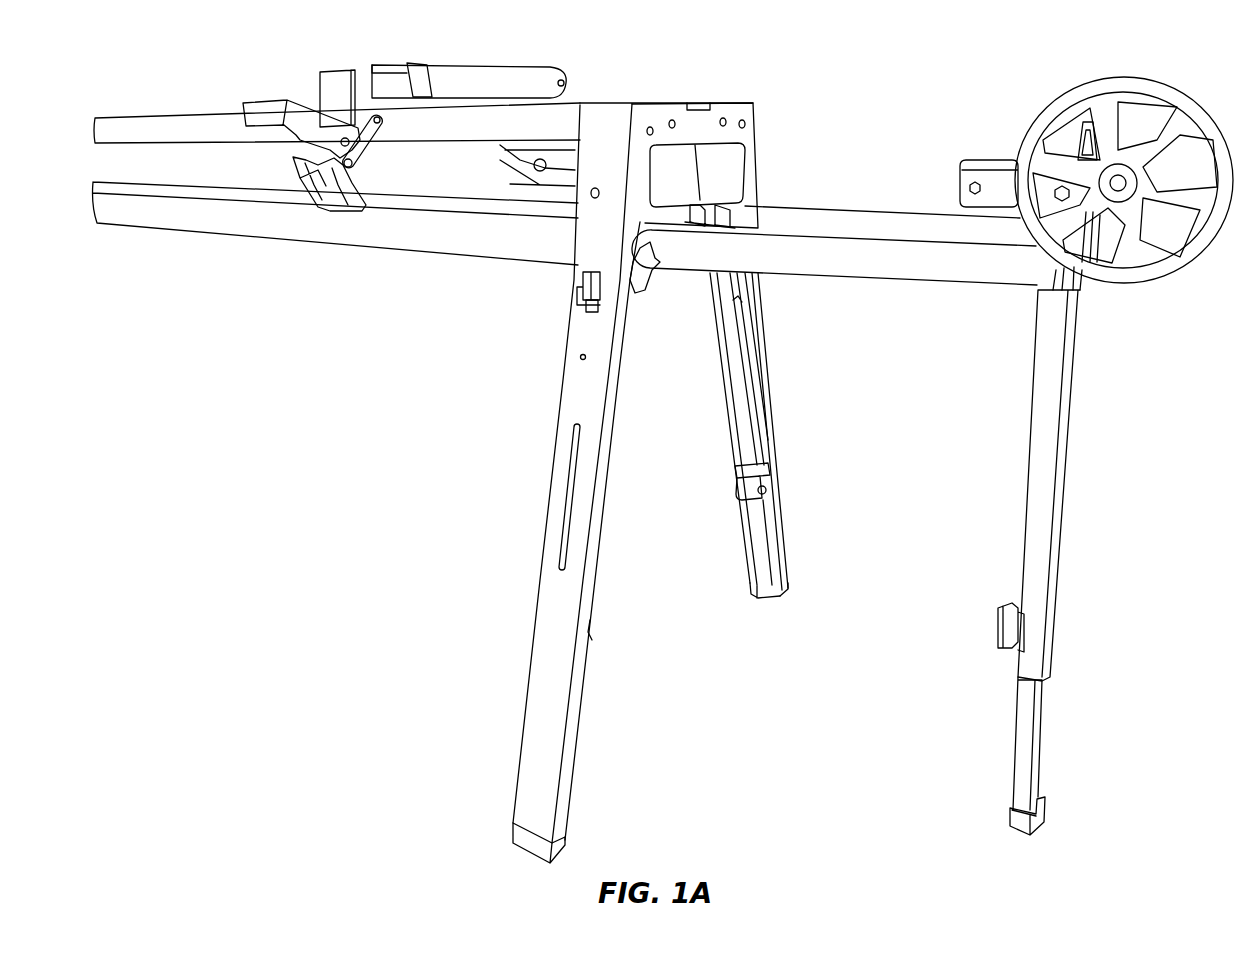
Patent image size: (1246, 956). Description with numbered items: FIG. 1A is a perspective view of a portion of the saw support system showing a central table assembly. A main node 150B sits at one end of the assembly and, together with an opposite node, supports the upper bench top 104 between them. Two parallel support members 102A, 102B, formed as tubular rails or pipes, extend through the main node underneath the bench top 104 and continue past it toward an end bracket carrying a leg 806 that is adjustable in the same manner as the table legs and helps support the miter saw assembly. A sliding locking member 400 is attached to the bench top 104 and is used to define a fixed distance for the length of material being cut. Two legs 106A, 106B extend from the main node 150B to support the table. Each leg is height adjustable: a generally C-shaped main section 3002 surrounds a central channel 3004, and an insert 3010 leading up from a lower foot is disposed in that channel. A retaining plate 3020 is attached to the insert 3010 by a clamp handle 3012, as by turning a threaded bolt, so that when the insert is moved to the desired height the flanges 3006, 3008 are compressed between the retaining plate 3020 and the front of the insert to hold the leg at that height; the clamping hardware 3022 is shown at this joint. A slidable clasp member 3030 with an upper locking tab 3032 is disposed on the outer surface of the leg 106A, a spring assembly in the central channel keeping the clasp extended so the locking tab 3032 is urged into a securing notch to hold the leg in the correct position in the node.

The bench top 104 is at (150, 130).
The parallel support member 102A is at (165, 218).
The parallel support member 102B is at (920, 225).
The sliding locking member 400 is at (373, 145).
The main node 150B is at (710, 128).
The upper locking tab 3032 is at (590, 283).
The slidable clasp member 3030 is at (582, 305).
The leg 106A is at (548, 652).
The leg 106B is at (763, 352).
The leg 806 is at (1043, 597).
The main section 3002 is at (575, 490).
The central channel 3004 is at (735, 350).
The flange 3006 is at (740, 405).
The flange 3008 is at (765, 423).
The clamp 3022 is at (764, 488).
The retaining plate 3020 is at (764, 532).
The insert 3010 is at (753, 598).
The clamp handle 3012 is at (778, 598).